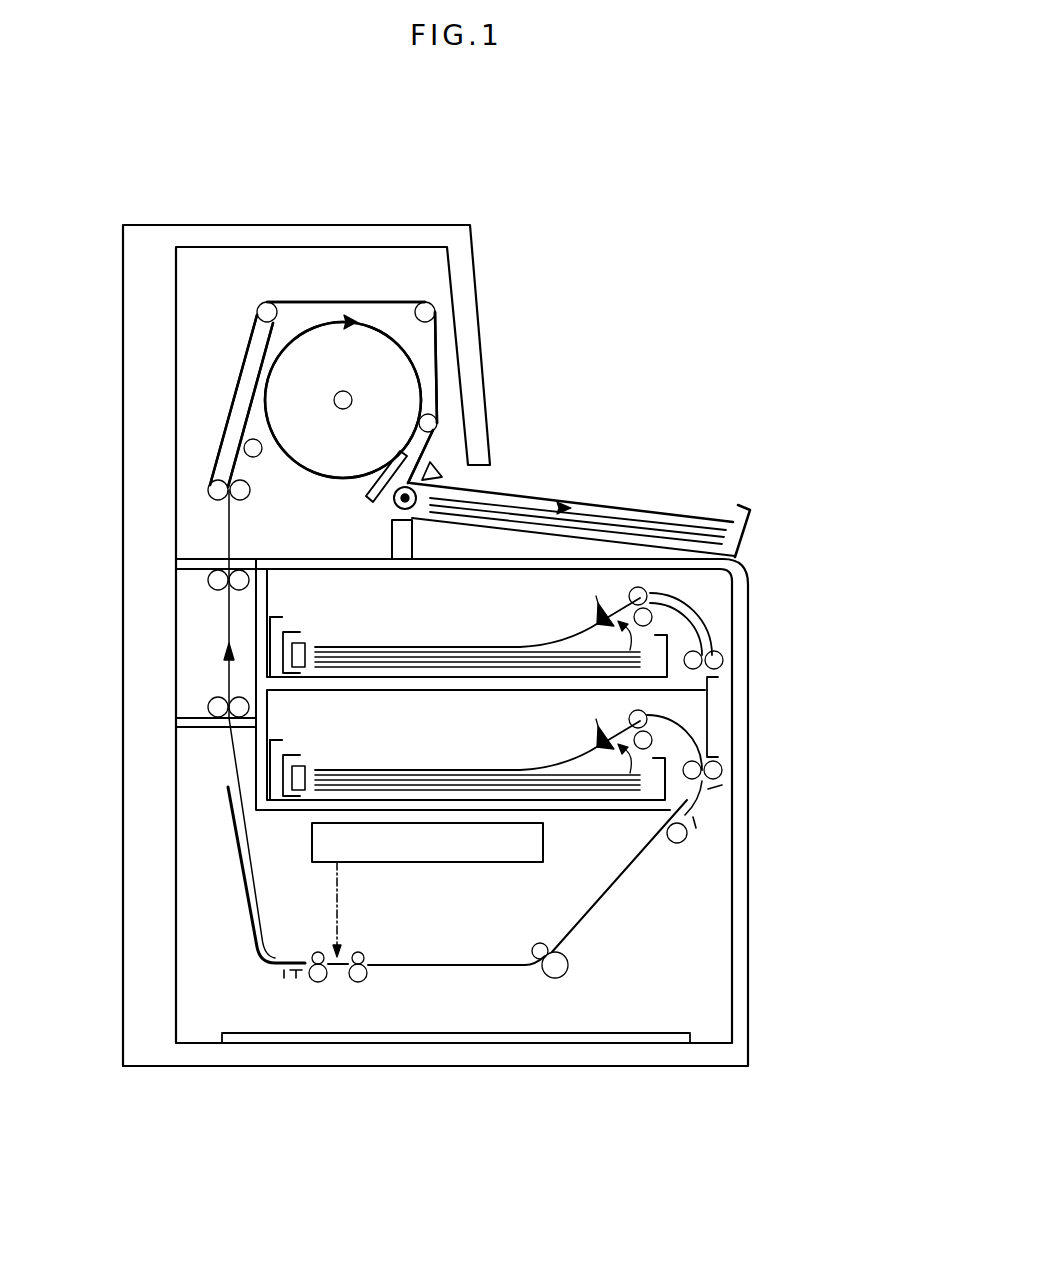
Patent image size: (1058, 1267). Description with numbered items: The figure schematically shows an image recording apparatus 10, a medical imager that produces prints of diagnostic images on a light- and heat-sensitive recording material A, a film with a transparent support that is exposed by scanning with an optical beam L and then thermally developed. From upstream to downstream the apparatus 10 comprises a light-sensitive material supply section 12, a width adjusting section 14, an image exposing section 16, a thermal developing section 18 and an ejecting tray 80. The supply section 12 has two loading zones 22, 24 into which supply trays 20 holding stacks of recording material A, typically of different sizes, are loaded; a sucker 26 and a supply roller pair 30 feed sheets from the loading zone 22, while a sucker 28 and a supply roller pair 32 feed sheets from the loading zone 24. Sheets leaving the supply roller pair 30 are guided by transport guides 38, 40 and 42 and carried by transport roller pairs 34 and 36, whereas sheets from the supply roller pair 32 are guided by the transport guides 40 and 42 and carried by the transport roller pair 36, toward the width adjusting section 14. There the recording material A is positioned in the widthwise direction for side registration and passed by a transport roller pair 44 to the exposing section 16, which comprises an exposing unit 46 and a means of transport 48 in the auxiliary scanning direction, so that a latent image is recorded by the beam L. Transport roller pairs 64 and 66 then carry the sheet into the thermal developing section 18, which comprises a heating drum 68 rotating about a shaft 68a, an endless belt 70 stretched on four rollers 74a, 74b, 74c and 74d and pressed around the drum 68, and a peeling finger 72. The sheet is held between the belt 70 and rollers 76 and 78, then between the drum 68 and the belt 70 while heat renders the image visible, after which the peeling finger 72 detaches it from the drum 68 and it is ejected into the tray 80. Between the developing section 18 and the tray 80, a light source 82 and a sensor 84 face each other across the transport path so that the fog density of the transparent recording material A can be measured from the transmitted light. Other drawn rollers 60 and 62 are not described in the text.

The image recording apparatus 10 is at (673, 355).
The light-sensitive material supply section 12 is at (795, 670).
The width adjusting section 14 is at (661, 897).
The image exposing section 16 is at (401, 990).
The thermal developing section 18 is at (402, 272).
The supply tray 20 is at (318, 672).
The loading zone 22 is at (404, 628).
The loading zone 24 is at (451, 750).
The sucker 26 is at (600, 608).
The sucker 28 is at (600, 732).
The supply roller pair 30 is at (650, 594).
The supply roller pair 32 is at (650, 716).
The transport roller pair 34 is at (722, 663).
The transport roller pair 36 is at (722, 770).
The transport guide 38 is at (712, 636).
The transport guide 40 is at (708, 738).
The transport guide 42 is at (697, 803).
The transport roller pair 44 is at (568, 966).
The exposing unit 46 is at (470, 840).
The means of transport 48 is at (341, 990).
The pinch roller 60 is at (364, 959).
The conveying roller pair 62 is at (312, 985).
The transport roller pair 64 is at (208, 713).
The transport roller pair 66 is at (208, 588).
The heating drum 68 is at (383, 383).
The shaft 68a is at (343, 391).
The endless belt 70 is at (403, 302).
The peeling finger 72 is at (372, 487).
The roller 74a is at (210, 500).
The roller 74b is at (268, 310).
The roller 74c is at (428, 310).
The roller 74d is at (431, 426).
The roller 76 is at (241, 500).
The roller 78 is at (256, 457).
The ejecting tray 80 is at (743, 533).
The light source 82 is at (395, 508).
The sensor 84 is at (442, 470).
The recording material A is at (668, 518).
The optical beam L is at (343, 905).